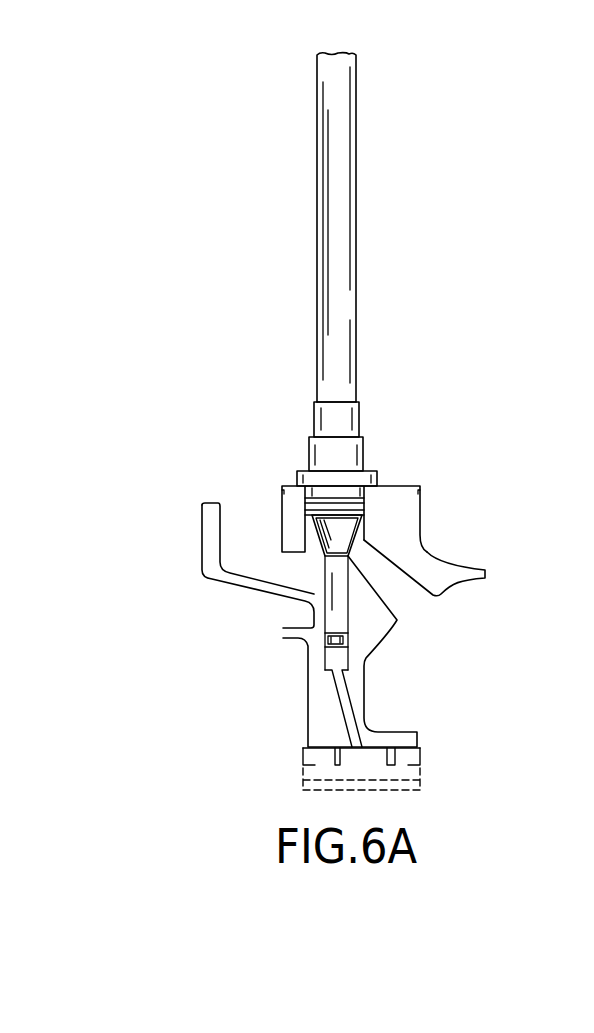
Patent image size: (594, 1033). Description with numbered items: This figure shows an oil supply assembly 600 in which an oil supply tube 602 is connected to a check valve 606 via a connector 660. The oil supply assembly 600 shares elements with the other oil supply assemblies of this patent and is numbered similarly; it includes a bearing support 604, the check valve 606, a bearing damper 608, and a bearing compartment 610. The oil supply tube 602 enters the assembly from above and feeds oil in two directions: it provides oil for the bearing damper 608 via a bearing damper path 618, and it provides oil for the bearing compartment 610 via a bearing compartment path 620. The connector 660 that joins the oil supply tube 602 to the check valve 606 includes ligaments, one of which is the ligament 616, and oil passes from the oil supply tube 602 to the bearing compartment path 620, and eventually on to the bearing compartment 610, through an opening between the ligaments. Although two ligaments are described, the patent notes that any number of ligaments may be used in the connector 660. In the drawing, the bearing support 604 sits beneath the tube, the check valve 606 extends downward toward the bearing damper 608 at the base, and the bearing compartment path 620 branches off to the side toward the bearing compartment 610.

The oil supply assembly 600 is at (206, 141).
The oil supply tube 602 is at (345, 194).
The bearing support 604 is at (288, 506).
The check valve 606 is at (335, 622).
The bearing damper 608 is at (291, 765).
The bearing compartment 610 is at (435, 653).
The ligament 616 is at (340, 533).
The bearing damper path 618 is at (332, 662).
The bearing compartment path 620 is at (387, 572).
The connector 660 is at (307, 549).